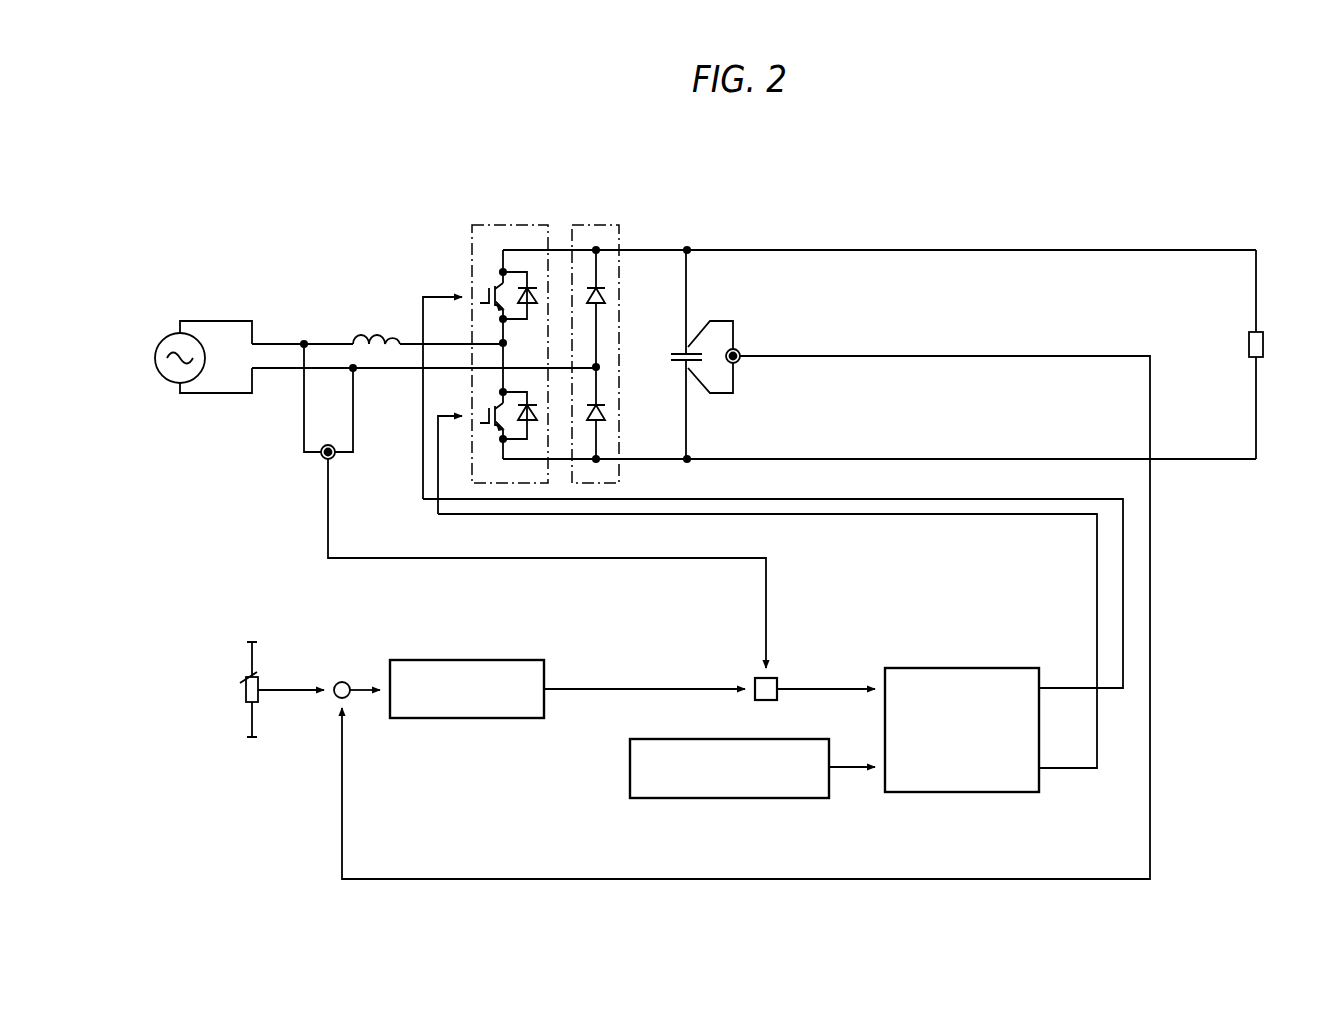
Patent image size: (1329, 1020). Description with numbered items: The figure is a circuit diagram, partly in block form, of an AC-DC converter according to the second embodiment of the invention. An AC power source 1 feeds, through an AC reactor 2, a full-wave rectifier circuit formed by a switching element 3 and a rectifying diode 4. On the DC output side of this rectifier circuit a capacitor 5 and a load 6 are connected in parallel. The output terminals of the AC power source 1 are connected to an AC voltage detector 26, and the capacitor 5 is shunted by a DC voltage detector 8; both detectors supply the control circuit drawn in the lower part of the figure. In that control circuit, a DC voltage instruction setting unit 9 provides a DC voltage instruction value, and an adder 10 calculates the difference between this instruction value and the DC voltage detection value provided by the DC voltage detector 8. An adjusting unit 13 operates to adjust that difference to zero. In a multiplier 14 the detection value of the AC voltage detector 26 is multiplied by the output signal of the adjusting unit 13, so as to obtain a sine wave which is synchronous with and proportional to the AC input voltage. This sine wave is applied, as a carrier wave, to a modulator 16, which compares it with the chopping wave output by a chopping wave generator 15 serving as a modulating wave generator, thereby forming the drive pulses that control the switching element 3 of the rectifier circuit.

The AC power source 1 is at (176, 333).
The AC reactor 2 is at (371, 338).
The switching element 3 is at (471, 242).
The rectifying diode 4 is at (621, 231).
The capacitor 5 is at (682, 350).
The load 6 is at (1265, 343).
The DC voltage detector 8 is at (739, 349).
The DC voltage instruction setting unit 9 is at (244, 677).
The adder 10 is at (342, 681).
The adjusting unit 13 is at (480, 720).
The multiplier 14 is at (778, 680).
The chopping wave generator 15 is at (728, 800).
The modulator 16 is at (963, 794).
The AC voltage detector 26 is at (323, 460).